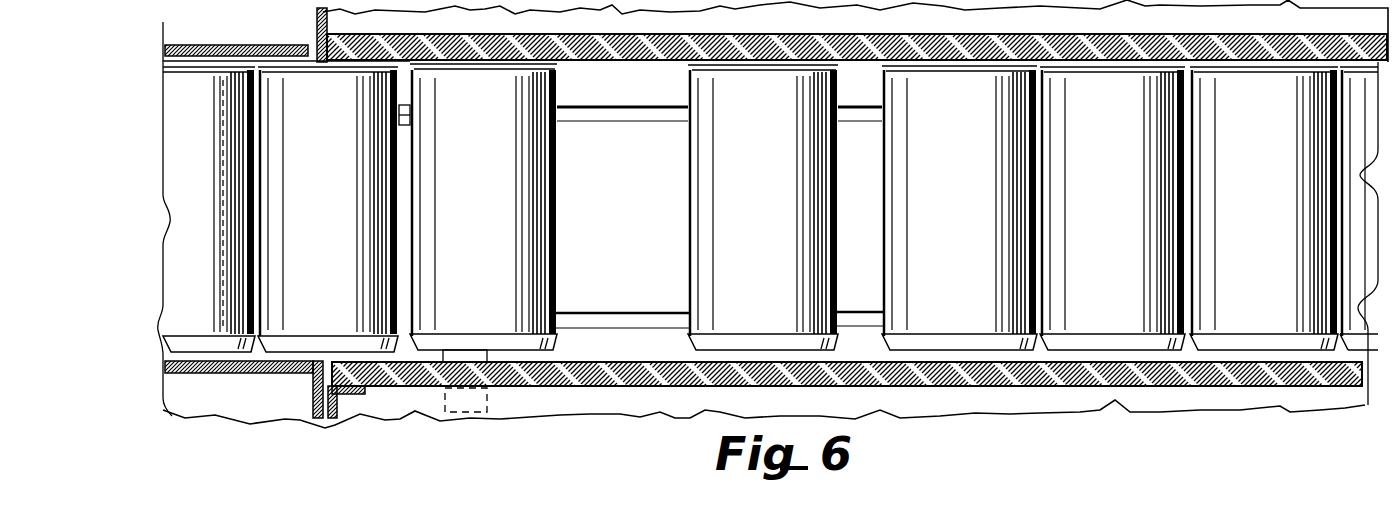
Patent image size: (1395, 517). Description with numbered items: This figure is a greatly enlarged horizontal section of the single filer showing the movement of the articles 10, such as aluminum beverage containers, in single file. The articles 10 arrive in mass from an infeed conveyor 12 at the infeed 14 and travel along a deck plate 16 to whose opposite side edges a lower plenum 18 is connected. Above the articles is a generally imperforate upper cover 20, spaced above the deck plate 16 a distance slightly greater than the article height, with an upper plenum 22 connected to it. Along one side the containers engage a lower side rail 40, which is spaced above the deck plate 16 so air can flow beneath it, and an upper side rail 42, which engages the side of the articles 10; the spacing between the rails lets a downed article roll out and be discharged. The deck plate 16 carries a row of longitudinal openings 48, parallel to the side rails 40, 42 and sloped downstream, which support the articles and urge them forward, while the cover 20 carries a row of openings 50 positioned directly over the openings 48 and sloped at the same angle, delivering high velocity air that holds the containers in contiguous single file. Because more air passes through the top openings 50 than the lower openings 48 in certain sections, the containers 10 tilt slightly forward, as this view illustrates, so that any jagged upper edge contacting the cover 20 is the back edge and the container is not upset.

The articles 10 is at (1271, 200).
The infeed conveyor 12 is at (185, 418).
The infeed 14 is at (316, 55).
The deck plate 16 is at (970, 386).
The lower plenum 18 is at (410, 405).
The upper cover 20 is at (985, 45).
The upper plenum 22 is at (472, 20).
The lower side rail 40 is at (632, 318).
The upper side rail 42 is at (648, 110).
The longitudinal openings 48 is at (597, 386).
The openings 50 is at (810, 42).